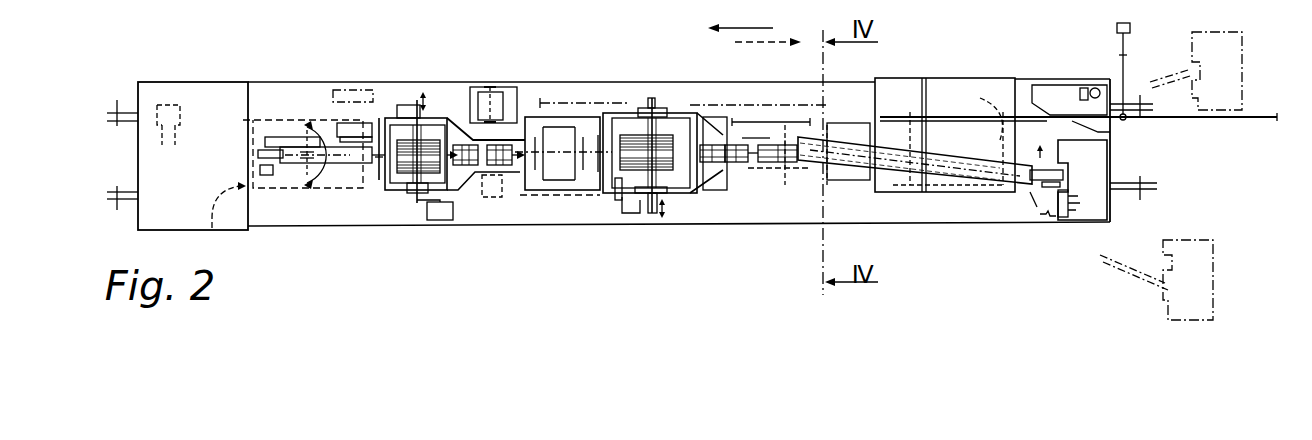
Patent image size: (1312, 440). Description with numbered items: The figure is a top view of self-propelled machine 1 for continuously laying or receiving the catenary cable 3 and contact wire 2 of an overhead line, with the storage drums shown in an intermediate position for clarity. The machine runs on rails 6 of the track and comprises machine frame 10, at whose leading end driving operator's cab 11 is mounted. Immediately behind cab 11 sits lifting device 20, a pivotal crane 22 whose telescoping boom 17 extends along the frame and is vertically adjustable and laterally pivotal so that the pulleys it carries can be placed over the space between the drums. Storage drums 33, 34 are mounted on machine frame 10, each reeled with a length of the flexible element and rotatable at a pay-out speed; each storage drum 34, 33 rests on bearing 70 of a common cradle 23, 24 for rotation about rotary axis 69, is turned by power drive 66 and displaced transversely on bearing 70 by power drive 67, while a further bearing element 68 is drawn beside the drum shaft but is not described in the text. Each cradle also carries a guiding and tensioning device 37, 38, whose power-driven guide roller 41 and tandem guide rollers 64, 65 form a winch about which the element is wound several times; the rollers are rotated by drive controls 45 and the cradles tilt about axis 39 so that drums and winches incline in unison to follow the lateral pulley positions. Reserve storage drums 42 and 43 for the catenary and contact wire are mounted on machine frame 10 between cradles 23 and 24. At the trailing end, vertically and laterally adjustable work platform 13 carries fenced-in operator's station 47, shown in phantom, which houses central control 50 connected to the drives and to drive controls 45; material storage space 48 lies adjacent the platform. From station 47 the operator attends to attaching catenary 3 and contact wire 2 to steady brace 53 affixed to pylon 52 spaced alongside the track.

The self-propelled machine 1 is at (256, 40).
The contact wire 2 is at (1203, 117).
The catenary cable 3 is at (943, 118).
The rails 6 is at (132, 126).
The machine frame 10 is at (848, 92).
The driving operator's cab 11 is at (195, 95).
The work platform 13 is at (1090, 195).
The boom 17 is at (337, 122).
The lifting device 20 is at (290, 143).
The pivotal crane 22 is at (338, 92).
The cradle 23 is at (451, 118).
The cradle 24 is at (610, 108).
The storage drum 33 is at (678, 132).
The storage drum 34 is at (383, 180).
The guiding and tensioning device 37 is at (753, 160).
The guiding and tensioning device 38 is at (480, 172).
The tilting axis 39 is at (590, 128).
The power-driven guide roller 41 is at (765, 144).
The reserve storage drum 42 is at (553, 173).
The reserve storage drum 43 is at (505, 102).
The drive control 45 is at (795, 122).
The operator's station 47 is at (1242, 46).
The material storage space 48 is at (1073, 100).
The central control 50 is at (1062, 222).
The pylon 52 is at (1130, 27).
The steady brace 53 is at (1125, 66).
The guide roller 64 is at (460, 162).
The guide roller 65 is at (470, 143).
The power drive 66 is at (647, 110).
The power drive 67 is at (397, 110).
The bearing 68 is at (410, 194).
The rotary axis 69 is at (413, 100).
The bearing 70 is at (643, 194).